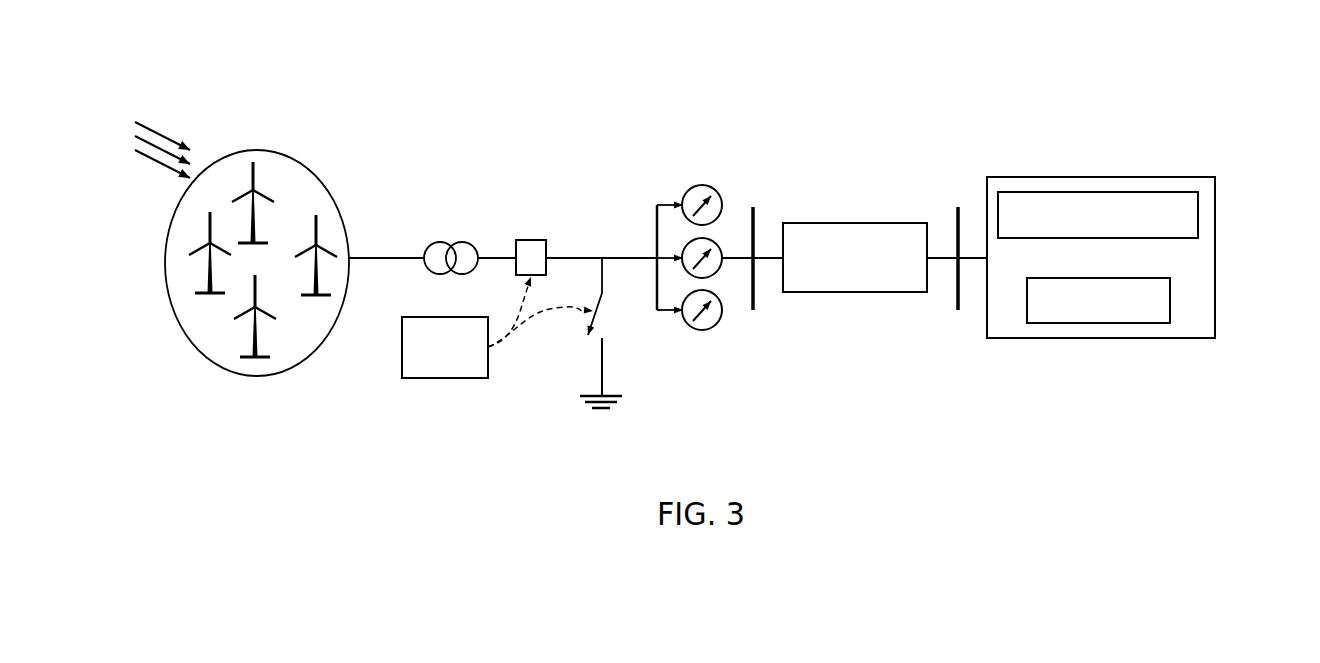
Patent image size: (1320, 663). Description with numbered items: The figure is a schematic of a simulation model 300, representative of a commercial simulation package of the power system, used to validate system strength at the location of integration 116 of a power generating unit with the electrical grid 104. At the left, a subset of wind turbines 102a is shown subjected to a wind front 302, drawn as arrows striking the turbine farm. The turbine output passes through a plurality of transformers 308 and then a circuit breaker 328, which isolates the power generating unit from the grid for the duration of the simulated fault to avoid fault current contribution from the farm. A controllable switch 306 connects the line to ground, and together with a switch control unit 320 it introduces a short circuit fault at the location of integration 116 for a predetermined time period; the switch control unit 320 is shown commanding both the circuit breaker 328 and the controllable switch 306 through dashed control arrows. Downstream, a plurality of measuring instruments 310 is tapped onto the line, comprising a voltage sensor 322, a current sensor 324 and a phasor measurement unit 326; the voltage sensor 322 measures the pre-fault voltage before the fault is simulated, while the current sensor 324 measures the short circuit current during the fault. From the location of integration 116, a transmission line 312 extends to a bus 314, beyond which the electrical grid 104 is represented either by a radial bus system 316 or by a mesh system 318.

The simulation model 300 is at (1160, 49).
The wind front 302 is at (162, 135).
The subset of wind turbines 102a is at (322, 175).
The transformers 308 is at (445, 237).
The circuit breaker 328 is at (533, 237).
The switch control unit 320 is at (443, 382).
The controllable switch 306 is at (603, 310).
The measuring instruments 310 is at (674, 210).
The voltage sensor 322 is at (686, 298).
The current sensor 324 is at (687, 241).
The phasor measurement unit 326 is at (701, 183).
The location of integration 116 is at (755, 203).
The transmission line 312 is at (855, 222).
The bus 314 is at (958, 203).
The electrical grid 104 is at (1127, 233).
The radial bus system 316 is at (1200, 216).
The mesh system 318 is at (1172, 300).